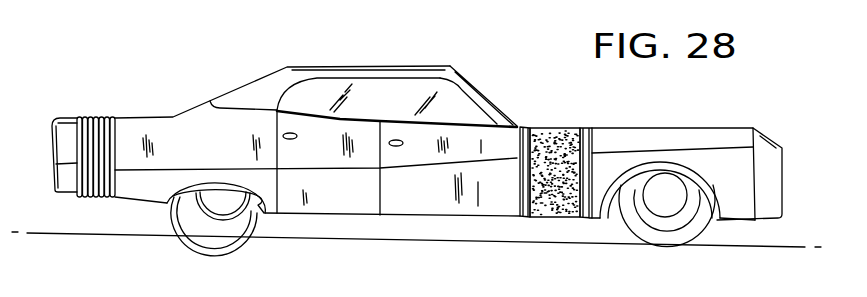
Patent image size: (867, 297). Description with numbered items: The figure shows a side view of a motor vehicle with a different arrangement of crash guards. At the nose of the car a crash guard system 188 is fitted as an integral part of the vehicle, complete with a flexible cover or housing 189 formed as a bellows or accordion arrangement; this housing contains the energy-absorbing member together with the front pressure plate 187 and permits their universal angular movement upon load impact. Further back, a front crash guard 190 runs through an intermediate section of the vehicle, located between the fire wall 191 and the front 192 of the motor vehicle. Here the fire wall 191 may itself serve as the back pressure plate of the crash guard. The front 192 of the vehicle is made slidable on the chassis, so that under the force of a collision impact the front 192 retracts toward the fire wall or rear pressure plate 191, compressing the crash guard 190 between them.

The front pressure plate 187 is at (584, 128).
The crash guard system 188 is at (118, 84).
The flexible cover or housing 189 is at (92, 194).
The front crash guard 190 is at (557, 124).
The fire wall 191 is at (528, 128).
The front of the motor vehicle 192 is at (680, 134).